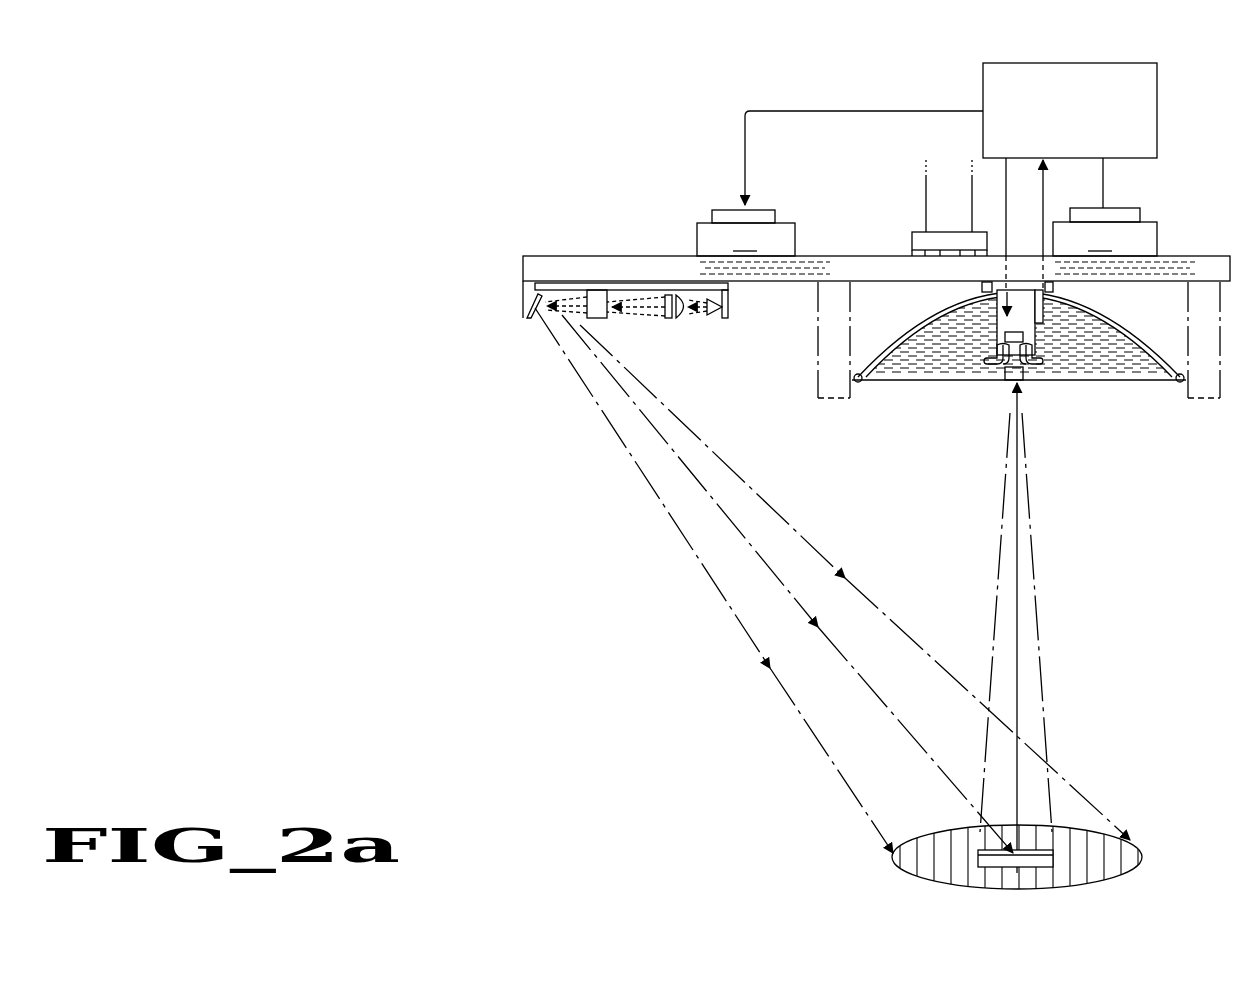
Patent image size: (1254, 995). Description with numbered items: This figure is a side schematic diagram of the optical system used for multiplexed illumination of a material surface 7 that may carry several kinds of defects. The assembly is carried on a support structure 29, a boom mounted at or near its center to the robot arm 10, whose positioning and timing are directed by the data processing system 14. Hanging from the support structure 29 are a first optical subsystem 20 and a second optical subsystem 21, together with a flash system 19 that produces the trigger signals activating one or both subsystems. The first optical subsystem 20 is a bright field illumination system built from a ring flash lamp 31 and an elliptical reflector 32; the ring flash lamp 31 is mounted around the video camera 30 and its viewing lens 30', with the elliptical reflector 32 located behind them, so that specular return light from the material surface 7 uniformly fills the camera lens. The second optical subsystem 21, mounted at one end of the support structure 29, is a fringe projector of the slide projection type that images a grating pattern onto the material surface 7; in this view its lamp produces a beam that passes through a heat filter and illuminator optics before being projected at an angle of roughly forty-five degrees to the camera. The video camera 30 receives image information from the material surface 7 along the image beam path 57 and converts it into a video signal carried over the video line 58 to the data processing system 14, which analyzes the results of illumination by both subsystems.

The material surface 7 is at (928, 857).
The robot arm 10 is at (923, 217).
The data processing system 14 is at (1157, 86).
The flash system 19 is at (927, 183).
The first optical subsystem 20 is at (1058, 386).
The second optical subsystem 21 is at (627, 342).
The support structure 29 is at (1190, 268).
The video camera 30 is at (972, 347).
The viewing lens 30' is at (1054, 362).
The ring flash lamp 31 is at (1040, 348).
The elliptical reflector 32 is at (1150, 348).
The image beam path 57 is at (1047, 716).
The video line 58 is at (1049, 209).